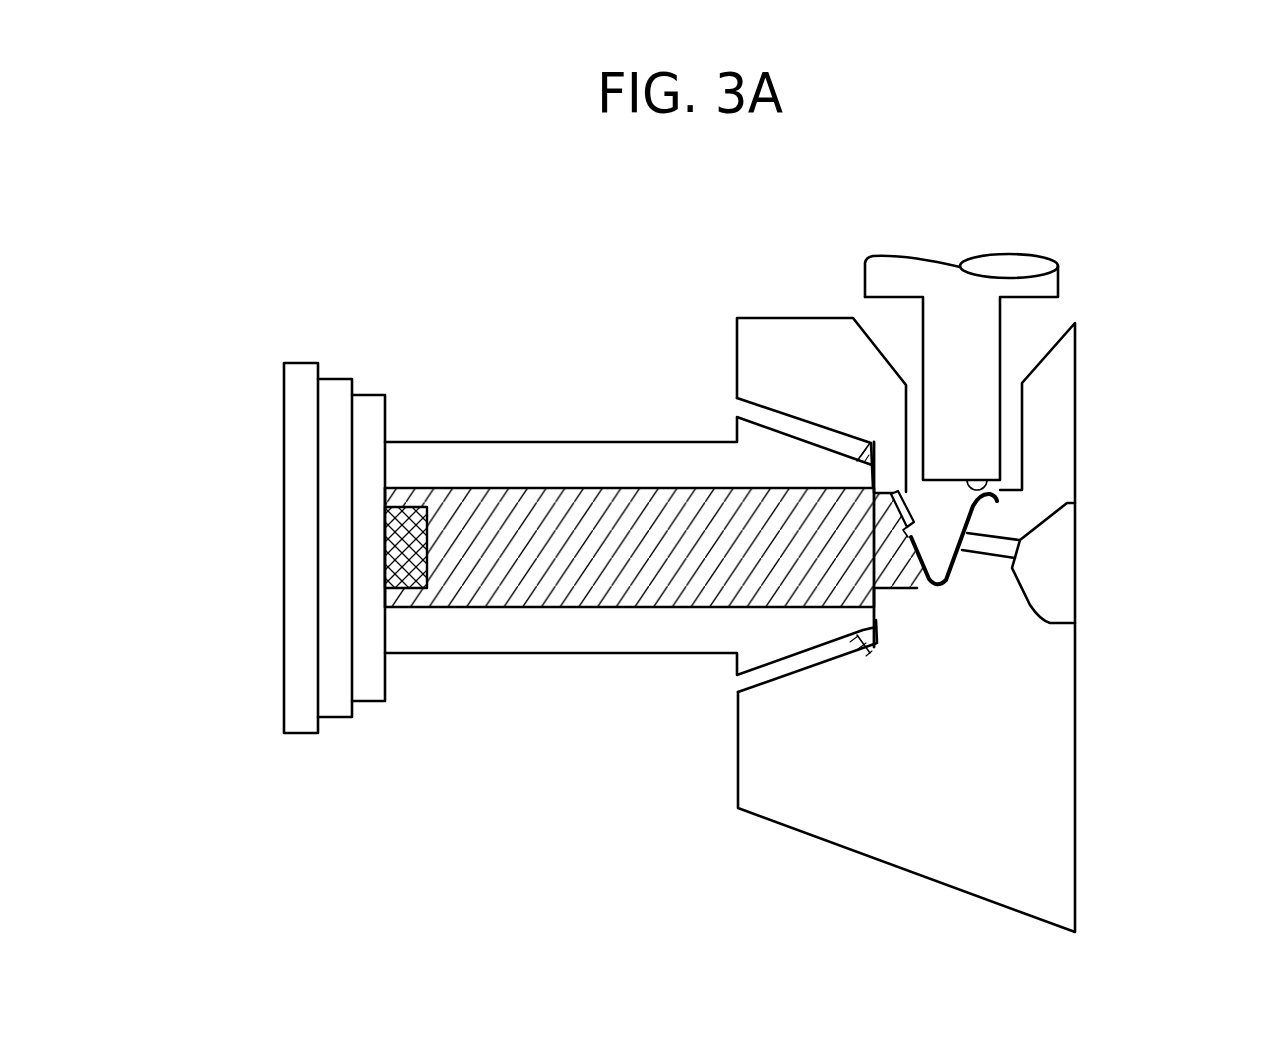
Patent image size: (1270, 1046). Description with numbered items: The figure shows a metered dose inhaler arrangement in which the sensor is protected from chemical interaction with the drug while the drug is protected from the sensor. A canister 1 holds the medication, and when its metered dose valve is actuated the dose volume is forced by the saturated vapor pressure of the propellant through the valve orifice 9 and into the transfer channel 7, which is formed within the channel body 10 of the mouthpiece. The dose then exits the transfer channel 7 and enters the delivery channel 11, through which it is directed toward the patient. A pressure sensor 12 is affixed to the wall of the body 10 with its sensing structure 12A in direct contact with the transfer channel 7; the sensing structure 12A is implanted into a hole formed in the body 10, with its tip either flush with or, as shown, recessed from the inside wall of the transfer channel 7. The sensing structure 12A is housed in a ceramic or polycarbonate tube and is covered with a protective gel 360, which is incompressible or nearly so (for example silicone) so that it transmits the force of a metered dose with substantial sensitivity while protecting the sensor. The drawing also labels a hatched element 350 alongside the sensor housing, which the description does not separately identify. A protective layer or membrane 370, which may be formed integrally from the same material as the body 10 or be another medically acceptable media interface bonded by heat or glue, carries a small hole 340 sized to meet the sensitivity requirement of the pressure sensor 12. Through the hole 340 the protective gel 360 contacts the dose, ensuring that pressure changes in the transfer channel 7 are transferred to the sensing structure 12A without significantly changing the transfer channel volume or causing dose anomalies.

The canister 1 is at (905, 273).
The transfer channel 7 is at (920, 492).
The valve orifice 9 is at (970, 490).
The channel body 10 is at (738, 772).
The delivery channel 11 is at (1057, 578).
The pressure sensor 12 is at (292, 466).
The sensing structure 12A is at (430, 606).
The hole 340 is at (917, 528).
The core member 350 is at (560, 603).
The protective gel 360 is at (921, 585).
The protective layer or membrane 370 is at (937, 548).